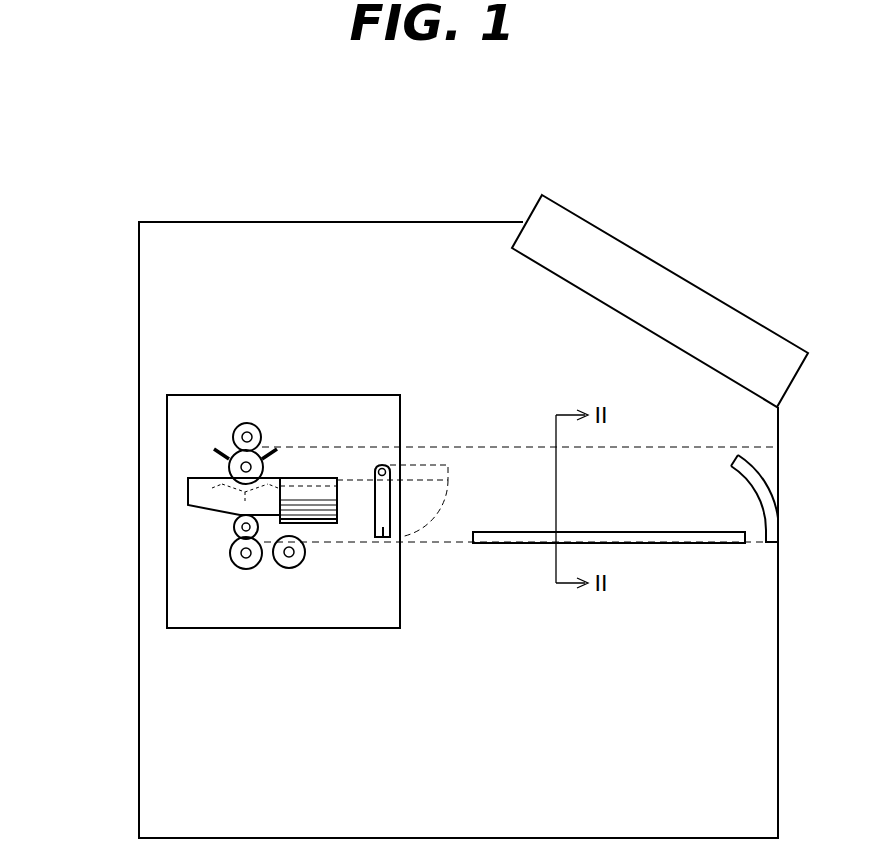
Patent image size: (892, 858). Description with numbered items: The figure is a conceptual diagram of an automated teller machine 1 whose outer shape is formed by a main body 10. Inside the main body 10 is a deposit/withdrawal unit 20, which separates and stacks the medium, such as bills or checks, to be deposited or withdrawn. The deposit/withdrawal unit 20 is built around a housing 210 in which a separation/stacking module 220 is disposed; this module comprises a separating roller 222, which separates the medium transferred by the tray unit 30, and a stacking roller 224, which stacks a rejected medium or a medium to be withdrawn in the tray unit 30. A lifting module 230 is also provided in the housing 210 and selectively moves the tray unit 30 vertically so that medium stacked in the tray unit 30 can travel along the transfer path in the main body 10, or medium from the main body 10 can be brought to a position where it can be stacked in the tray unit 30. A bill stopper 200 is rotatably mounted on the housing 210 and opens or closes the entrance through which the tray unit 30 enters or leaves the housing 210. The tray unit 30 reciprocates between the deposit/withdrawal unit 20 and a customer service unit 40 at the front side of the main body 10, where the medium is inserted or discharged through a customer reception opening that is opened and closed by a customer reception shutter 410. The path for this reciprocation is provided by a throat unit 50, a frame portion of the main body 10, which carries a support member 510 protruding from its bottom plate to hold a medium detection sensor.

The automated teller machine 1 is at (522, 103).
The main body 10 is at (345, 222).
The deposit/withdrawal unit 20 is at (238, 491).
The tray unit 30 is at (265, 516).
The customer service unit 40 is at (795, 480).
The throat unit 50 is at (648, 565).
The bill stopper 200 is at (383, 537).
The housing 210 is at (245, 628).
The separation/stacking module 220 is at (157, 503).
The separating roller 222 is at (280, 562).
The stacking roller 224 is at (234, 438).
The lifting module 230 is at (322, 523).
The customer reception shutter 410 is at (763, 502).
The support member 510 is at (665, 543).